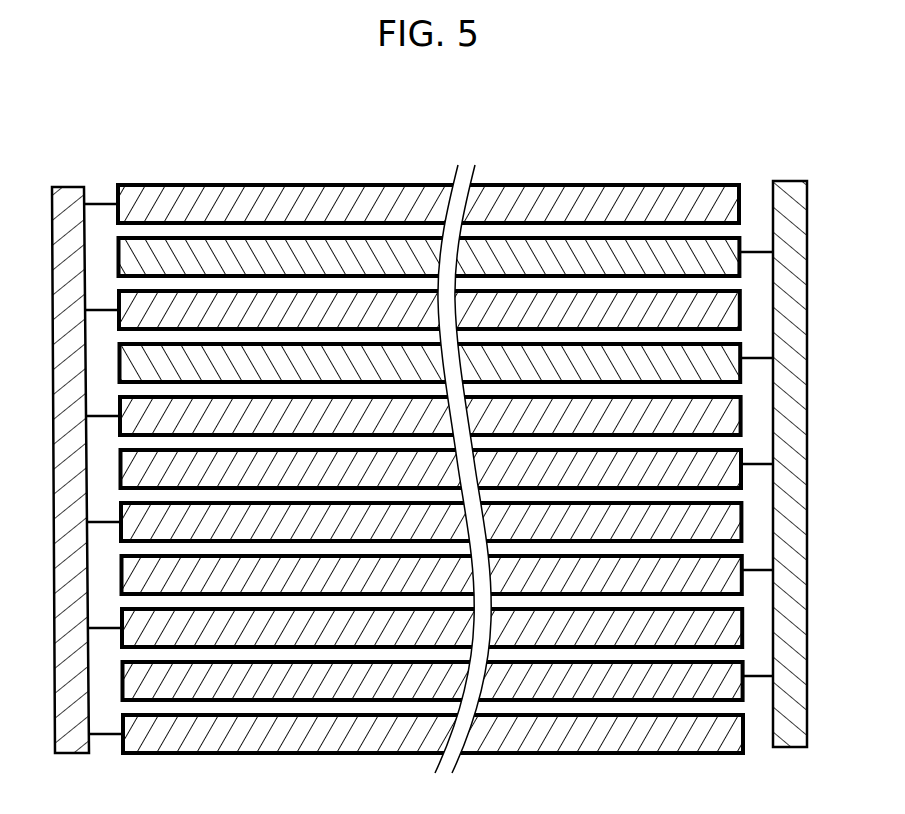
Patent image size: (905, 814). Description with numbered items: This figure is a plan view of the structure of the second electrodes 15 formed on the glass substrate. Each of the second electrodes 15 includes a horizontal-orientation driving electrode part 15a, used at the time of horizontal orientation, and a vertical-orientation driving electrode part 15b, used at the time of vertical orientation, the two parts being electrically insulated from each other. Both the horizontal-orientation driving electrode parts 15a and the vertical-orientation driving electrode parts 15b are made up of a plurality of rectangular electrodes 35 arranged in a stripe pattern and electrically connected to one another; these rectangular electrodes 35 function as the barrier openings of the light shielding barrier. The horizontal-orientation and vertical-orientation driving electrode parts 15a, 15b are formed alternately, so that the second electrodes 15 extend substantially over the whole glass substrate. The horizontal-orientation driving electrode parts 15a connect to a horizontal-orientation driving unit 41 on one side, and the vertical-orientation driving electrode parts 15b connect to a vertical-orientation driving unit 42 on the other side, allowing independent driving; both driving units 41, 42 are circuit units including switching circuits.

The second electrode 15 is at (430, 411).
The horizontal-orientation driving electrode part 15a is at (598, 237).
The vertical-orientation driving electrode part 15b is at (556, 184).
The rectangular electrode 35 is at (228, 185).
The horizontal-orientation driving unit 41 is at (64, 197).
The vertical-orientation driving unit 42 is at (790, 190).